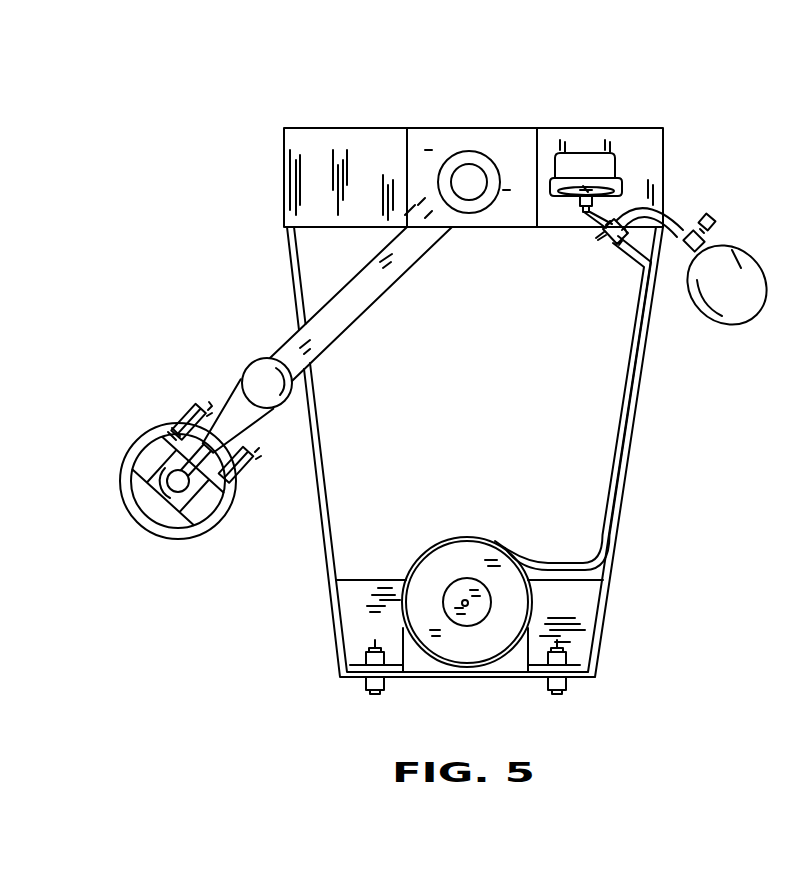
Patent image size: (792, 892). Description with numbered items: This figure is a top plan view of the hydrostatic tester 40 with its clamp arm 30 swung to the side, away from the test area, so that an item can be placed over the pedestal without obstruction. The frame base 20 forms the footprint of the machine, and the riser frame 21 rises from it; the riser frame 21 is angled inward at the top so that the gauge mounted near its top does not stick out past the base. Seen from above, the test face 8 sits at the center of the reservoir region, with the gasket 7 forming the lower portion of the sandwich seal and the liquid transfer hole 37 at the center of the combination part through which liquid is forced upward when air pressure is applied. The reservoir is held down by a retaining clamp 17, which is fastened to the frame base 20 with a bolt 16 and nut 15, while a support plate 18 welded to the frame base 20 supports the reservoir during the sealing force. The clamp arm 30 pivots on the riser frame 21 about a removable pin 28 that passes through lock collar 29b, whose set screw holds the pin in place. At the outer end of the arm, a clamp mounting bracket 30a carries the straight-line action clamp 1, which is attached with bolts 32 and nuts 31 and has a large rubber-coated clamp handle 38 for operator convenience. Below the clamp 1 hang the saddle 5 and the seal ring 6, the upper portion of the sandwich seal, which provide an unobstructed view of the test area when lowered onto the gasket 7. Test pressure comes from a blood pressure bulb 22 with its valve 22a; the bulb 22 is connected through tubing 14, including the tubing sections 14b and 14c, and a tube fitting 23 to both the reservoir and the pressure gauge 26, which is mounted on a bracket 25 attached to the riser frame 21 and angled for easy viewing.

The straight-line action clamp 1 is at (225, 496).
The saddle 5 is at (205, 513).
The seal ring 6 is at (165, 536).
The gasket 7 is at (515, 602).
The test face 8 is at (435, 658).
The tubing 14 is at (612, 478).
The tubing 14b is at (677, 214).
The tubing 14c is at (600, 242).
The nut 15 is at (365, 656).
The bolt 16 is at (562, 681).
The retaining clamp 17 is at (403, 638).
The support plate 18 is at (364, 597).
The frame base 20 is at (322, 452).
The riser frame 21 is at (345, 145).
The blood pressure bulb 22 is at (731, 272).
The bulb valve 22a is at (715, 219).
The tube fitting 23 is at (612, 248).
The bracket 25 is at (580, 206).
The pressure gauge 26 is at (626, 194).
The removable pin 28 is at (475, 178).
The lock collar 29b is at (442, 160).
The clamp arm 30 is at (350, 313).
The clamp mounting bracket 30a is at (252, 478).
The nuts 31 is at (204, 404).
The bolts 32 is at (175, 425).
The liquid transfer hole 37 is at (465, 599).
The clamp handle 38 is at (241, 401).
The hydrostatic tester 40 is at (636, 513).